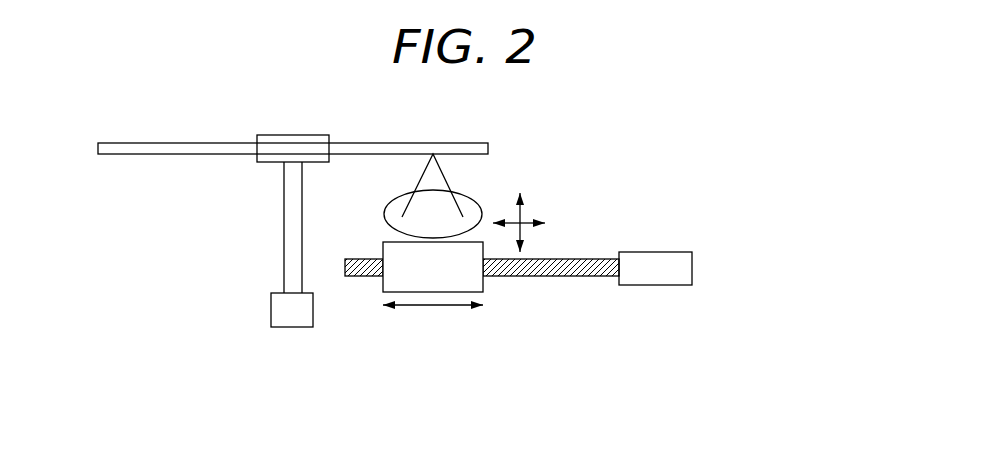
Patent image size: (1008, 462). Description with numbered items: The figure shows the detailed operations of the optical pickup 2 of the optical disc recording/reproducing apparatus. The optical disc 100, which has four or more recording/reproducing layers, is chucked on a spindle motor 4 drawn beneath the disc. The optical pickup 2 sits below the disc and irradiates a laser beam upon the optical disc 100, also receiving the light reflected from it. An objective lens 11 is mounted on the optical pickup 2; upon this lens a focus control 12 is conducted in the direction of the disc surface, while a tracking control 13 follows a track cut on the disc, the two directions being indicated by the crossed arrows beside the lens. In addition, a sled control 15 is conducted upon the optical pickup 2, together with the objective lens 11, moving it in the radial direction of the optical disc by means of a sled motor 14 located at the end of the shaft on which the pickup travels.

The optical disc 100 is at (178, 150).
The spindle motor 4 is at (290, 320).
The objective lens 11 is at (392, 205).
The optical pickup 2 is at (380, 246).
The focus control 12 is at (525, 200).
The tracking control 13 is at (545, 222).
The sled motor 14 is at (656, 275).
The sled control 15 is at (430, 308).